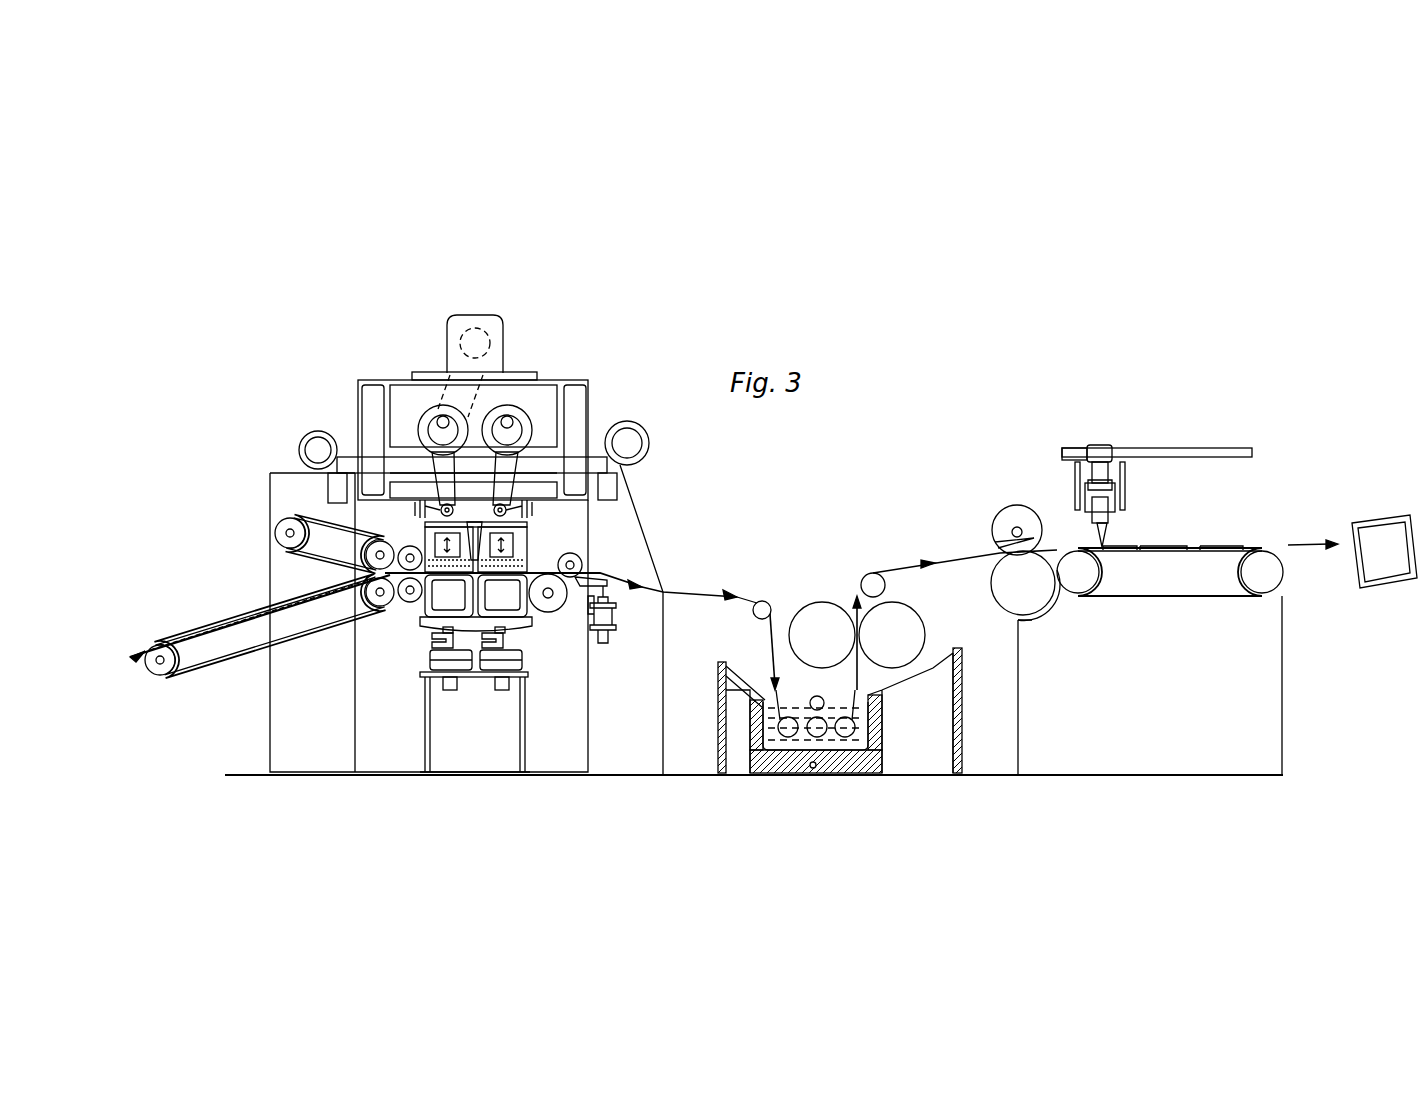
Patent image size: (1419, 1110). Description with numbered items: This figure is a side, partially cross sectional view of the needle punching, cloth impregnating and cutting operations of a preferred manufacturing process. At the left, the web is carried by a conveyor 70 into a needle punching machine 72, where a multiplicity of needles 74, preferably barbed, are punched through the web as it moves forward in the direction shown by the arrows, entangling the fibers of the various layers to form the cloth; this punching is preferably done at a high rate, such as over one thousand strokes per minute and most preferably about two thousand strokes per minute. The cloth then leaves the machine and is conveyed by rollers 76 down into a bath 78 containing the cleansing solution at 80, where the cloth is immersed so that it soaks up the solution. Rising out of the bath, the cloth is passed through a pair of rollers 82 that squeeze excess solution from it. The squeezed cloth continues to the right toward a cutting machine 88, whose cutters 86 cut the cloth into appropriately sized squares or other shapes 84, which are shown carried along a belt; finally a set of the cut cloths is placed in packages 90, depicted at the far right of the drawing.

The infeed conveyor belts 70 is at (222, 672).
The needle punching machine 72 is at (338, 418).
The needles 74 is at (540, 559).
The rollers 76 is at (764, 601).
The bath 78 is at (850, 757).
The cleansing solution 80 is at (860, 731).
The rollers 82 is at (827, 617).
The squares or other shapes 84 is at (1207, 547).
The cutters 86 is at (1012, 503).
The cutting machine 88 is at (1162, 447).
The packages 90 is at (1380, 517).